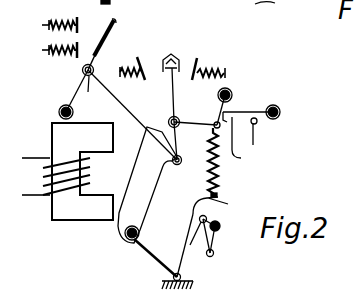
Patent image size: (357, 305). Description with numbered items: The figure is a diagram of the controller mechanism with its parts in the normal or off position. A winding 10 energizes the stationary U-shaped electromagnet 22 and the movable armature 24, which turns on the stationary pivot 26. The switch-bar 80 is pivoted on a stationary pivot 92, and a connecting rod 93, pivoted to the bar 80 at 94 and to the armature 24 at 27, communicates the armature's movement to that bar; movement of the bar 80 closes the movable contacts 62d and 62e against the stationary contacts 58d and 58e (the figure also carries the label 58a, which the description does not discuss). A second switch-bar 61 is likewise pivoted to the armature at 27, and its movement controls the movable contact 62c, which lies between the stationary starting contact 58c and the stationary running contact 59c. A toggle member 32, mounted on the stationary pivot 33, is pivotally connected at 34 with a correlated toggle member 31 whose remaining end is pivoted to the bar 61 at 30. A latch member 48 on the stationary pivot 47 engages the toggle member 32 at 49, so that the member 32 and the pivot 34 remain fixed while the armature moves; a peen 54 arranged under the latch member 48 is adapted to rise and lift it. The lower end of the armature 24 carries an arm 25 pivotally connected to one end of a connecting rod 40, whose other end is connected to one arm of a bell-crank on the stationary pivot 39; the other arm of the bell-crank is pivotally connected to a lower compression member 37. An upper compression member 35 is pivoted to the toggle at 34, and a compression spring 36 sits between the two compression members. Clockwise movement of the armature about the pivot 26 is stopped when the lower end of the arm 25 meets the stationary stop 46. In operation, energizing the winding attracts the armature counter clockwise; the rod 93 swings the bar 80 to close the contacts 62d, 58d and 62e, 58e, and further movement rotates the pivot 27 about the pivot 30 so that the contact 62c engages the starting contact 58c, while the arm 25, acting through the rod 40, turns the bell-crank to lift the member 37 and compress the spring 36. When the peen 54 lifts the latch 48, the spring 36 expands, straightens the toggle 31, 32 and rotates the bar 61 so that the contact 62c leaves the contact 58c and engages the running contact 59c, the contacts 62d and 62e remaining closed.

The winding 10 is at (33, 160).
The stationary U-shaped electromagnet 22 is at (52, 219).
The movable armature 24 is at (145, 202).
The arm 25 is at (166, 263).
The stationary pivot 26 is at (139, 230).
The pivot 27 is at (176, 165).
The pivot 30 is at (177, 113).
The toggle member 31 is at (210, 130).
The toggle member 32 is at (233, 104).
The stationary pivot 33 is at (231, 89).
The pivot 34 is at (215, 122).
The upper compression member 35 is at (186, 151).
The compression spring 36 is at (218, 167).
The lower compression member 37 is at (220, 205).
The stationary pivot 39 is at (221, 227).
The connecting rod 40 is at (185, 264).
The stationary stop 46 is at (186, 274).
The stationary pivot 47 is at (281, 111).
The latch member 48 is at (263, 111).
The engagement point 49 is at (248, 144).
The peen 54 is at (257, 122).
The spring 58a is at (73, 18).
The stationary starting contact 58c is at (197, 67).
The stationary contact 58d is at (50, 297).
The stationary contact 58e is at (59, 60).
The stationary running contact 59c is at (140, 57).
The switch-bar 61 is at (169, 103).
The movable contact 62c is at (178, 57).
The movable contact 62d is at (113, 24).
The movable contact 62e is at (107, 50).
The switch-bar 80 is at (79, 95).
The stationary pivot 92 is at (59, 112).
The connecting rod 93 is at (117, 101).
The pivot 94 is at (94, 95).